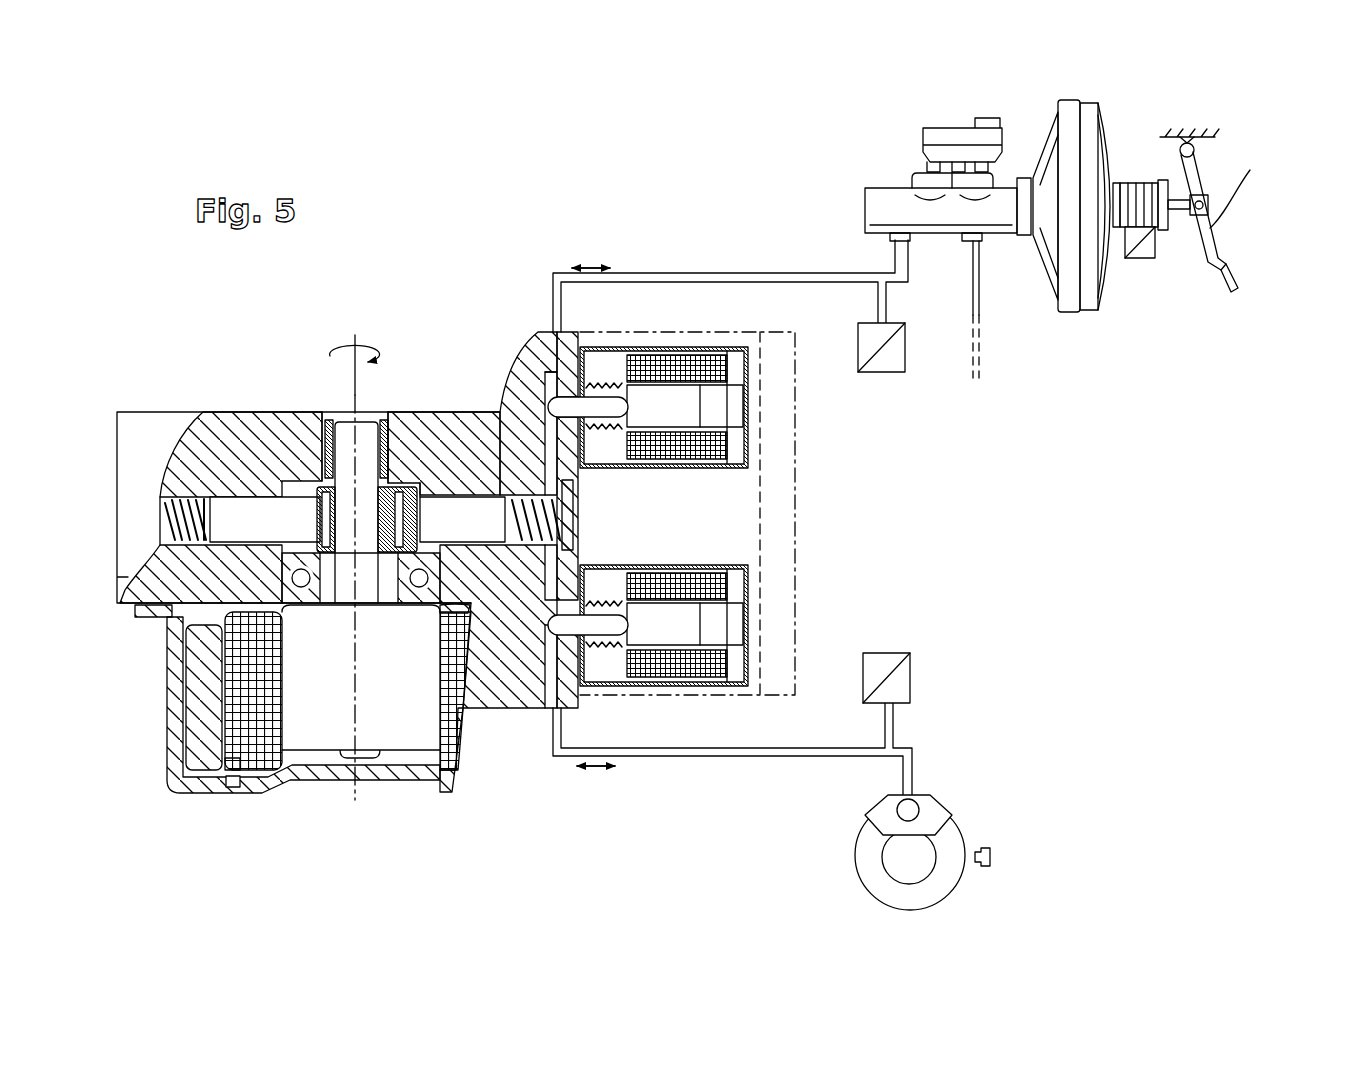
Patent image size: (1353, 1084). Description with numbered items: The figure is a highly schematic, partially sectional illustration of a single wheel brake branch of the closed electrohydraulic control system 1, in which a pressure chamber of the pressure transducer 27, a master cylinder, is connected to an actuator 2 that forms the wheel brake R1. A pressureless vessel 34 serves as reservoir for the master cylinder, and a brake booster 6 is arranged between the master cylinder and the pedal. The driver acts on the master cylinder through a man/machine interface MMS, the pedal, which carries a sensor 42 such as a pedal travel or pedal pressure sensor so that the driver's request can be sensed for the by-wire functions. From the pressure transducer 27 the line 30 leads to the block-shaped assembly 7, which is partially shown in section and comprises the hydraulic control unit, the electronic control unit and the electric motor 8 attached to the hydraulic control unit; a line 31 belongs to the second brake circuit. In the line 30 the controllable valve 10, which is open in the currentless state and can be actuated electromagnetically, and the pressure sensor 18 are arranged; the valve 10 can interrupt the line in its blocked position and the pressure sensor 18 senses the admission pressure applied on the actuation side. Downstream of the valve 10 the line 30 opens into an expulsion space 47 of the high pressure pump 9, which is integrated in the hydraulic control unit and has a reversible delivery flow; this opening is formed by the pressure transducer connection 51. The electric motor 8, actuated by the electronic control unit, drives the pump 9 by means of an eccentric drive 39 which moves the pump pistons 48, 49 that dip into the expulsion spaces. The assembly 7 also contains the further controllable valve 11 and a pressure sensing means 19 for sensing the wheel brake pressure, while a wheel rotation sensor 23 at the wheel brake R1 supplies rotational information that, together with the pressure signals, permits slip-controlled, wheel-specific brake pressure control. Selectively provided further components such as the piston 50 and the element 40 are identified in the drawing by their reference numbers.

The electrohydraulic control system 1 is at (455, 293).
The actuator 2 is at (860, 886).
The brake booster 6 is at (1085, 125).
The block-shaped assembly 7 is at (147, 410).
The electric motor 8 is at (303, 740).
The high pressure pump 9 is at (386, 505).
The controllable valve 10 is at (757, 417).
The controllable valve 11 is at (762, 609).
The pressure sensor 18 is at (881, 372).
The pressure sensing means 19 is at (885, 653).
The wheel rotation sensor 23 is at (995, 857).
The pressure transducer 27 is at (880, 208).
The line 30 is at (675, 273).
The line 31 is at (980, 274).
The pressureless vessel 34 is at (930, 140).
The eccentric drive 39 is at (416, 484).
The motor position sensor 40 is at (232, 790).
The sensor 42 is at (1138, 258).
The expulsion space 47 is at (562, 556).
The pump piston 48 is at (160, 612).
The pump piston 49 is at (478, 505).
The pump piston 50 is at (255, 507).
The pressure transducer connection 51 is at (548, 332).
The wheel brake R1 is at (935, 810).
The man/machine interface MMS is at (1214, 210).